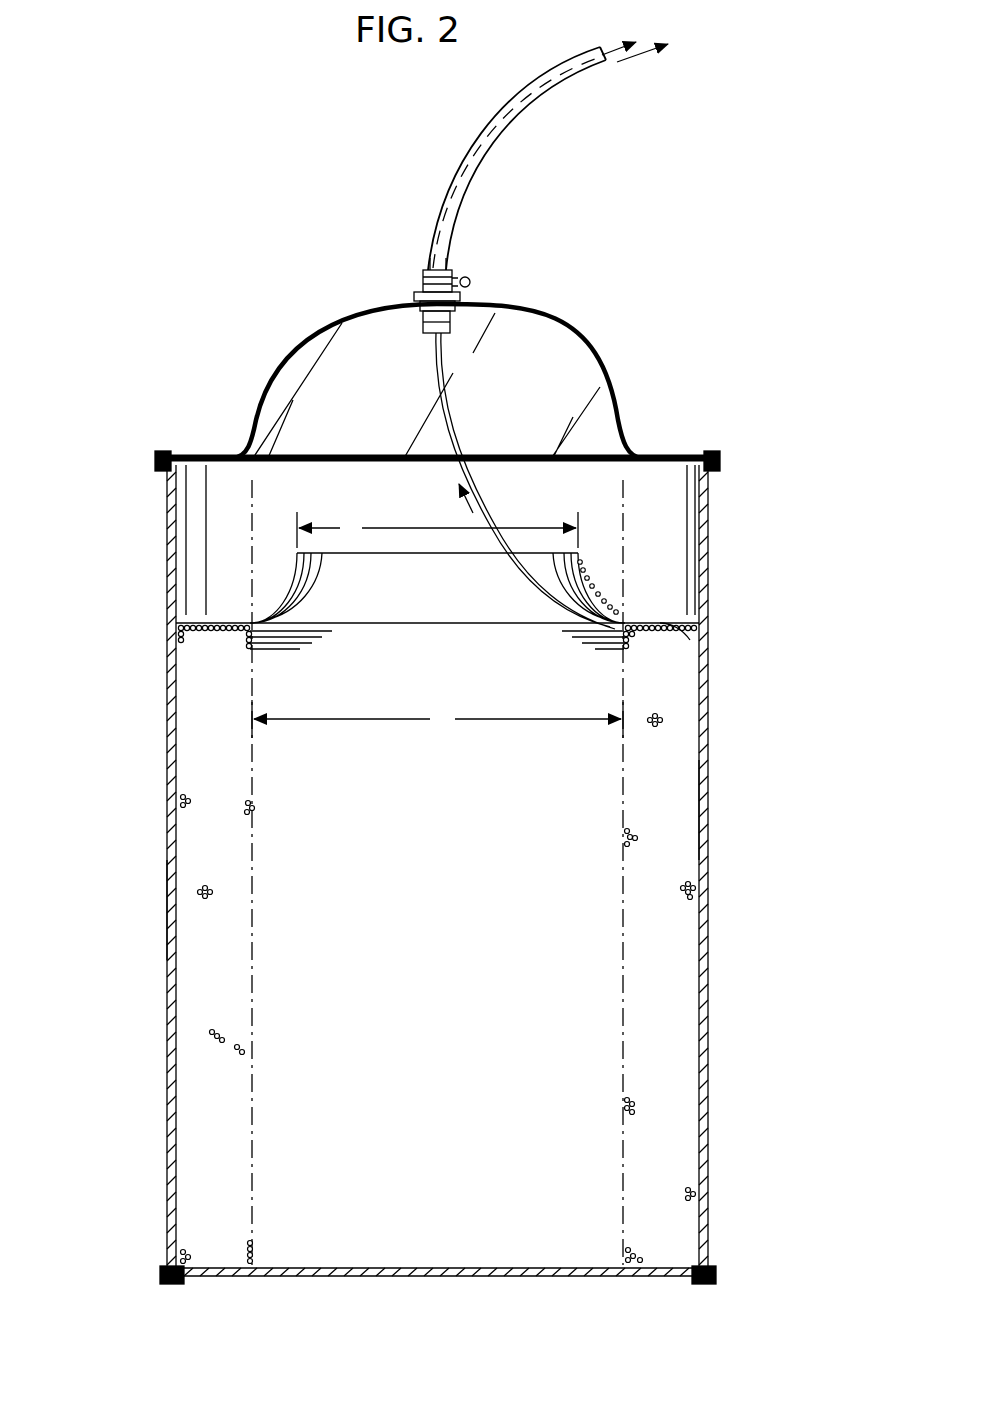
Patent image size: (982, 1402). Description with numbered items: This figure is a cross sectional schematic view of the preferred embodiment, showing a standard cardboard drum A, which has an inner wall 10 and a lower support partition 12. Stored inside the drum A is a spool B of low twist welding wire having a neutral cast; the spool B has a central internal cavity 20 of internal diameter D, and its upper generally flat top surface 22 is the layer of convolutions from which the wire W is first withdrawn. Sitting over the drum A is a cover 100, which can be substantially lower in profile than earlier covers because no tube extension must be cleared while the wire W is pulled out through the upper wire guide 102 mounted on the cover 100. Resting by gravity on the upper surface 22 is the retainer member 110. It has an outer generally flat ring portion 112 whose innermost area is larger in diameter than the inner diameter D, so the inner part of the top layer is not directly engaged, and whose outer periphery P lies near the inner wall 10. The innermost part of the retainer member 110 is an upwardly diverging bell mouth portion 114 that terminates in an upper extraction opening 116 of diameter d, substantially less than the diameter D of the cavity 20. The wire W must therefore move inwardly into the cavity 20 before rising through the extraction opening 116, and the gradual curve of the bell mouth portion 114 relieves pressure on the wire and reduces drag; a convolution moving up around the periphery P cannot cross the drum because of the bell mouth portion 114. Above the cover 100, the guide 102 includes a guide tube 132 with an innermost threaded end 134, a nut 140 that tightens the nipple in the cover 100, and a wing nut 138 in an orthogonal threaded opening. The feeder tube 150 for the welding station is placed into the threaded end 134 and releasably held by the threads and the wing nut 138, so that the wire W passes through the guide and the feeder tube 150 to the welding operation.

The inner wall 10 is at (700, 500).
The lower support partition 12 is at (492, 1277).
The internal cavity 20 is at (622, 838).
The upper flat top surface 22 is at (200, 620).
The cover 100 is at (303, 333).
The upper wire guide 102 is at (456, 258).
The retainer member 110 is at (606, 590).
The outer flat ring portion 112 is at (672, 631).
The bell mouth portion 114 is at (297, 566).
The upper extraction opening 116 is at (419, 562).
The guide tube 132 is at (427, 326).
The threaded end 134 is at (428, 268).
The wing nut 138 is at (470, 276).
The nut 140 is at (424, 300).
The feeder tube 150 is at (497, 129).
The wire W is at (462, 431).
The outer periphery P is at (185, 626).
The drum A is at (160, 903).
The wire spool B is at (678, 812).
The extraction opening diameter d is at (437, 530).
The internal cavity diameter D is at (437, 719).